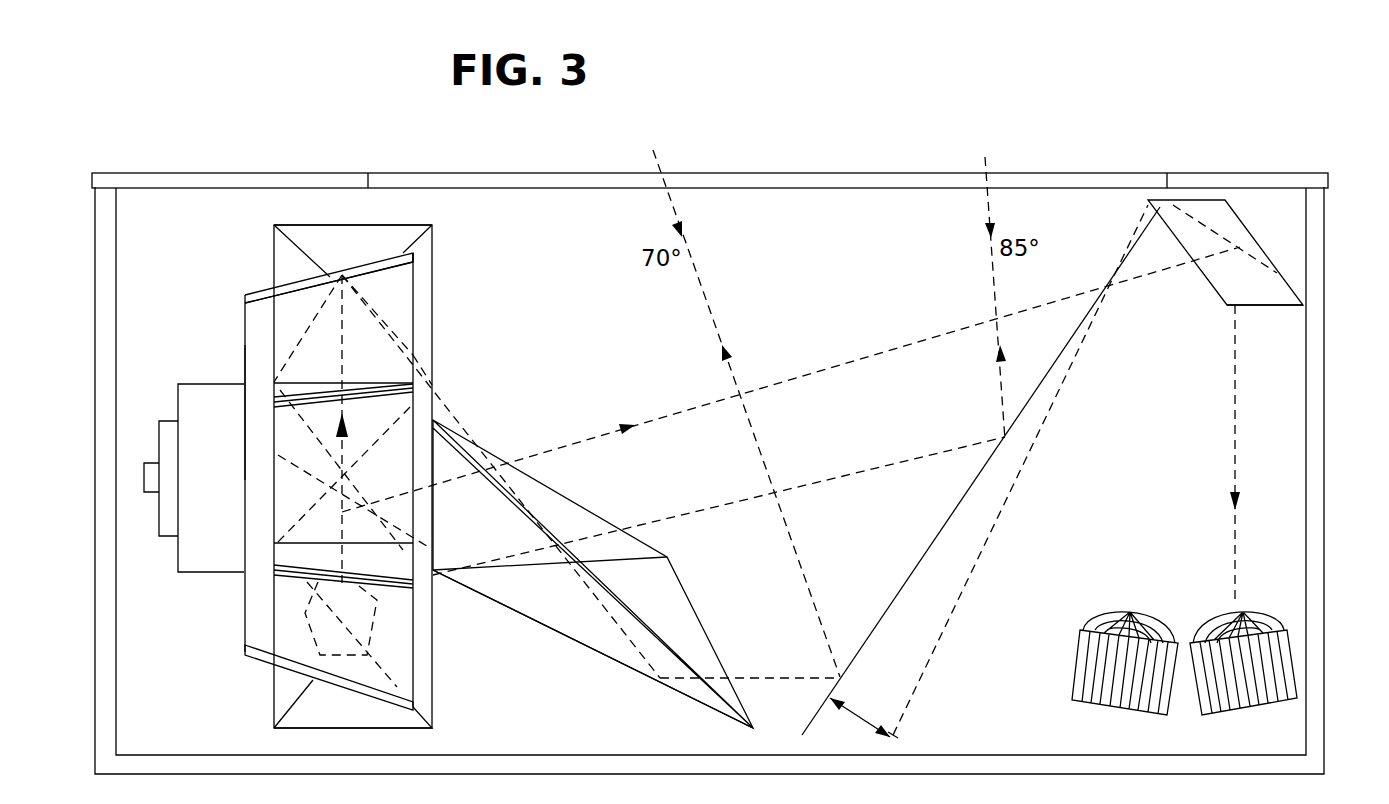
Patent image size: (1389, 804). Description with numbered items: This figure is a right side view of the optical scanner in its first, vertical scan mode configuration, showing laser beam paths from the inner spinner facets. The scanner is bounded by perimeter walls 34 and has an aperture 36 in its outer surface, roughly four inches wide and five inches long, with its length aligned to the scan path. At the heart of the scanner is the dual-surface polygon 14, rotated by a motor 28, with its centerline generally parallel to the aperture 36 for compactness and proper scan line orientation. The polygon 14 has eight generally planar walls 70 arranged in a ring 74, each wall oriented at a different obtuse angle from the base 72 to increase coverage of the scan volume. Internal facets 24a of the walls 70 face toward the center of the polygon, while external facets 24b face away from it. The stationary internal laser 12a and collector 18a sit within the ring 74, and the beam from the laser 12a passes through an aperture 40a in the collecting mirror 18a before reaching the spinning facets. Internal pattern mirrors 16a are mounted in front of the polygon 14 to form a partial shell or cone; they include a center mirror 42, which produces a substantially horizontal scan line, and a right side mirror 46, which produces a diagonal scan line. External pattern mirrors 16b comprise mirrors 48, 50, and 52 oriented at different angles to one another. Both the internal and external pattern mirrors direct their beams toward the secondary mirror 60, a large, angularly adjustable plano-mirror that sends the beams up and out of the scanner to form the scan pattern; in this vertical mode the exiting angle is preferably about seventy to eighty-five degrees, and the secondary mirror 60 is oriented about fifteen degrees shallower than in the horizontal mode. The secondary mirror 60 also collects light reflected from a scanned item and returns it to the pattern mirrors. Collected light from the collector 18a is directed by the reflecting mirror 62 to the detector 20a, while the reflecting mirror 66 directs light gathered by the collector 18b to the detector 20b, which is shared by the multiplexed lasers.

The laser 12a is at (357, 618).
The dual-surface polygon 14 is at (232, 660).
The internal pattern mirrors 16a is at (593, 567).
The external pattern mirrors 16b is at (258, 228).
The collector 18a is at (395, 583).
The collector 18b is at (243, 638).
The detector 20a is at (1270, 665).
The detector 20b is at (1108, 712).
The internal facets 24a is at (409, 263).
The external facets 24b is at (245, 294).
The motor 28 is at (197, 573).
The perimeter walls 34 is at (98, 338).
The aperture 36 is at (446, 172).
The aperture 40a is at (340, 511).
The center mirror 42 is at (625, 665).
The right side mirror 46 is at (527, 470).
The mirror 48 is at (436, 247).
The mirror 50 is at (300, 540).
The mirror 52 is at (430, 696).
The secondary mirror 60 is at (880, 622).
The reflecting mirror 62 is at (1240, 247).
The reflecting mirror 66 is at (1268, 306).
The planar walls 70 is at (252, 286).
The base 72 is at (230, 345).
The ring 74 is at (299, 271).